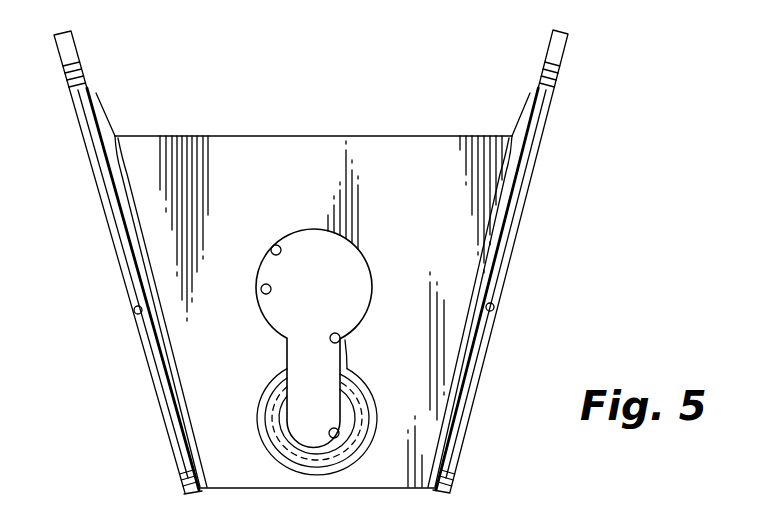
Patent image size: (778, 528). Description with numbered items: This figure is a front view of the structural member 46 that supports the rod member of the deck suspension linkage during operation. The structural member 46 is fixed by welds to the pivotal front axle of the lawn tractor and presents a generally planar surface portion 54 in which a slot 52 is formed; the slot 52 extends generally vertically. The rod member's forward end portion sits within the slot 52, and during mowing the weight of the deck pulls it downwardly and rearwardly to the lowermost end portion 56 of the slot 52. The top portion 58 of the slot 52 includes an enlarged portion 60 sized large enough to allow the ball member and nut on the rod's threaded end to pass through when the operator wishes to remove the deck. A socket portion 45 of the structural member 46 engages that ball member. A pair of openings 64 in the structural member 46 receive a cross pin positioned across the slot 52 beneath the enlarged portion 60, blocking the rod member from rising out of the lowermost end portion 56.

The socket portion 45 is at (267, 410).
The structural member 46 is at (527, 213).
The slot 52 is at (340, 335).
The generally planar surface portion 54 is at (421, 190).
The lowermost end portion 56 is at (339, 436).
The top portion 58 is at (275, 245).
The enlarged portion 60 is at (261, 286).
The openings 64 is at (136, 315).